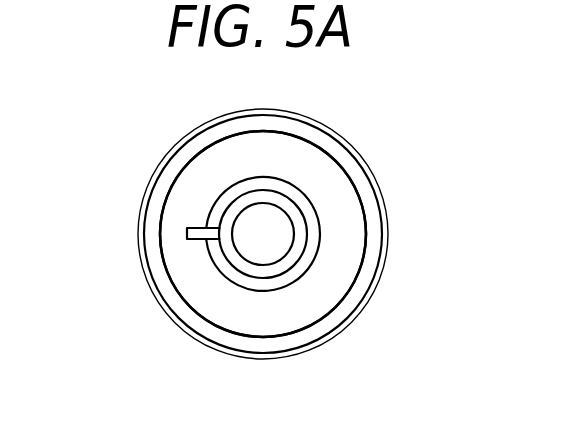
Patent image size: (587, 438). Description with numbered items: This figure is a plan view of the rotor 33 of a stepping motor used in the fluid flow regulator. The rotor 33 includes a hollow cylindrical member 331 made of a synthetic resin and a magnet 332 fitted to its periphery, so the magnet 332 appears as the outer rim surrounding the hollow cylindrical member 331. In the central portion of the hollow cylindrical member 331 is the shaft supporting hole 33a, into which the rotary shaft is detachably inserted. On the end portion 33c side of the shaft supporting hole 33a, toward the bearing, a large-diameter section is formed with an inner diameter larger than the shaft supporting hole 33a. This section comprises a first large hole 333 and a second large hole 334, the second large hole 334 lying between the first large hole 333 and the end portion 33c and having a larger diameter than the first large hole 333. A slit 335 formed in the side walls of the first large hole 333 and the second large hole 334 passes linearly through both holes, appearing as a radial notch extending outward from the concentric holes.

The rotor 33 is at (386, 154).
The shaft supporting hole 33a is at (245, 222).
The end portion 33c is at (228, 318).
The hollow cylindrical member 331 is at (313, 310).
The magnet 332 is at (310, 130).
The first large hole 333 is at (266, 198).
The second large hole 334 is at (317, 223).
The slit 335 is at (194, 231).